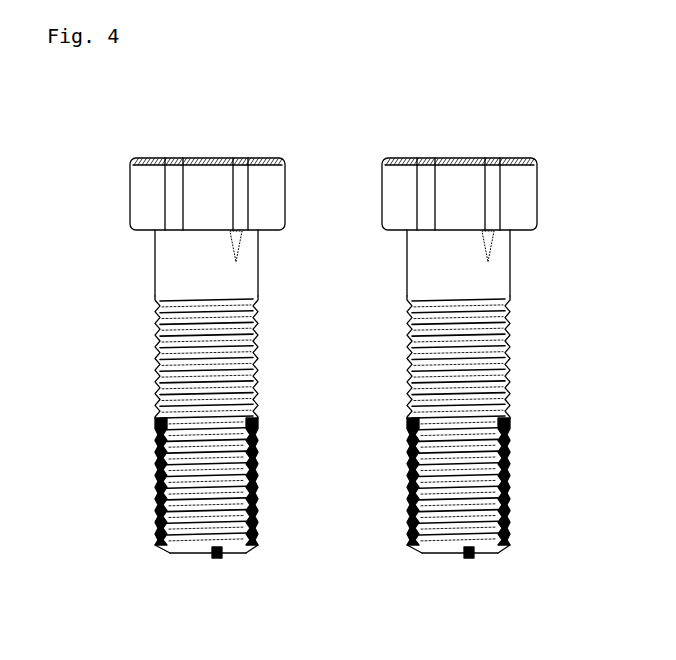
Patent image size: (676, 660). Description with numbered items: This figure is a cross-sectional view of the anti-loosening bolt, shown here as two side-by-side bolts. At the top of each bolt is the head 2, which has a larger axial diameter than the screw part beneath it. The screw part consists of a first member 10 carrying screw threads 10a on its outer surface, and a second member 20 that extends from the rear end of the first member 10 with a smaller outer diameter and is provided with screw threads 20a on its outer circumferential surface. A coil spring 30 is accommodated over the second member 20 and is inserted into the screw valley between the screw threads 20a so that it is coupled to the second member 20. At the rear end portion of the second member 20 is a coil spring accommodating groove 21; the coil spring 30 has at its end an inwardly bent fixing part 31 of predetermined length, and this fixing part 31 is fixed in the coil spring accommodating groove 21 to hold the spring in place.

The head 2 is at (470, 178).
The first member 10 is at (440, 282).
The screw threads 10a is at (407, 335).
The second member 20 is at (255, 548).
The screw threads 20a is at (406, 470).
The coil spring 30 is at (157, 428).
The coil spring accommodating groove 21 is at (208, 556).
The fixing part 31 is at (216, 560).